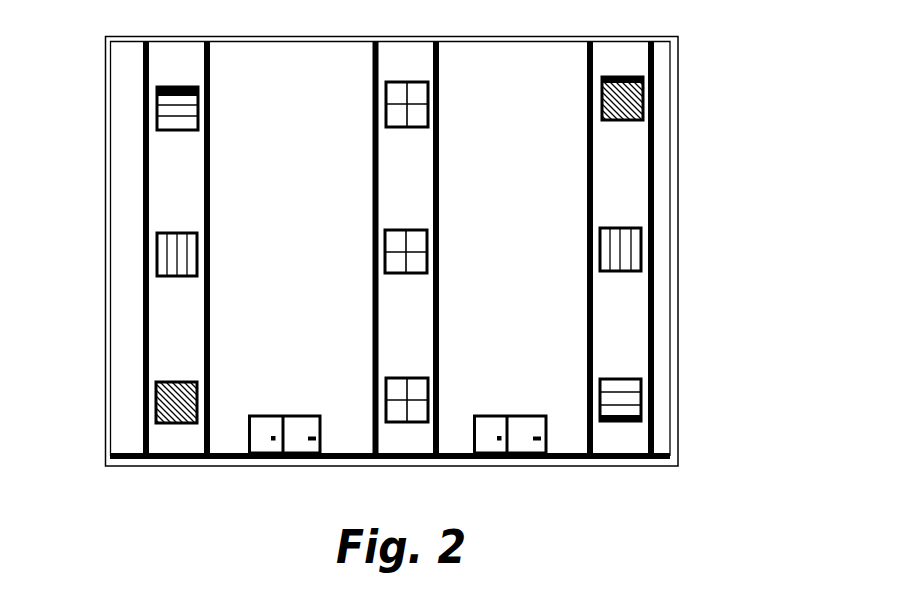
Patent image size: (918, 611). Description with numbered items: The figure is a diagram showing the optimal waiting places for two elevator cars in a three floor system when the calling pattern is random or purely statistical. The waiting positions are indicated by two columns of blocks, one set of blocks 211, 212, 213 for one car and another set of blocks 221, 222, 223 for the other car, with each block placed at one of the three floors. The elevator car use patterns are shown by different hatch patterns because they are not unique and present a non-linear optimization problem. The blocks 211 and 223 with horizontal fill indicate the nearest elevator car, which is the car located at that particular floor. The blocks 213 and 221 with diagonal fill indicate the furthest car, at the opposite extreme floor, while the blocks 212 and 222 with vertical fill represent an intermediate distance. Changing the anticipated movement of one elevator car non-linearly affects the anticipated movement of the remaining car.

The block with horizontal fill 211 is at (172, 129).
The block with vertical fill 212 is at (180, 234).
The block with diagonal fill 213 is at (172, 382).
The block with diagonal fill 221 is at (625, 120).
The block with vertical fill 222 is at (620, 271).
The block with horizontal fill 223 is at (623, 379).